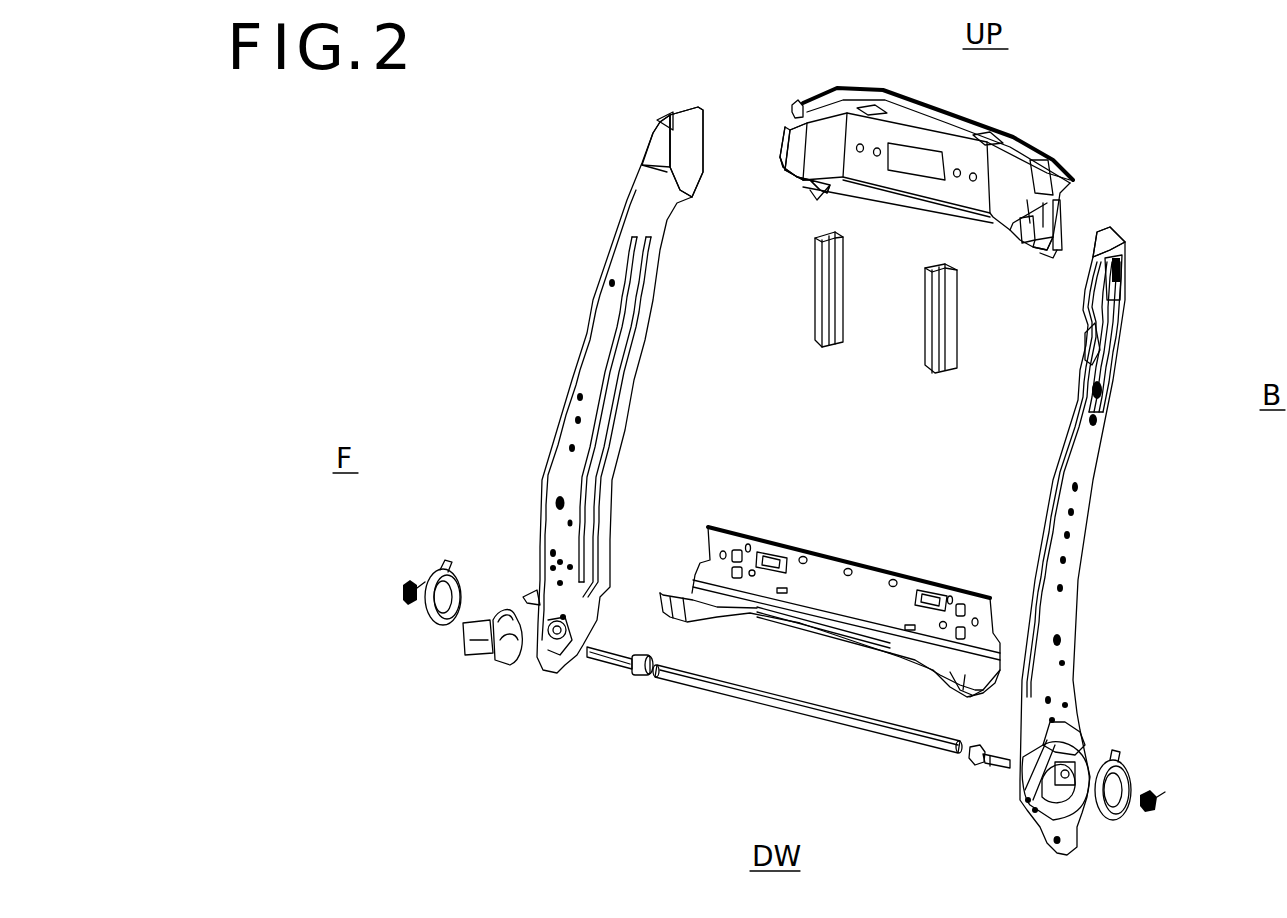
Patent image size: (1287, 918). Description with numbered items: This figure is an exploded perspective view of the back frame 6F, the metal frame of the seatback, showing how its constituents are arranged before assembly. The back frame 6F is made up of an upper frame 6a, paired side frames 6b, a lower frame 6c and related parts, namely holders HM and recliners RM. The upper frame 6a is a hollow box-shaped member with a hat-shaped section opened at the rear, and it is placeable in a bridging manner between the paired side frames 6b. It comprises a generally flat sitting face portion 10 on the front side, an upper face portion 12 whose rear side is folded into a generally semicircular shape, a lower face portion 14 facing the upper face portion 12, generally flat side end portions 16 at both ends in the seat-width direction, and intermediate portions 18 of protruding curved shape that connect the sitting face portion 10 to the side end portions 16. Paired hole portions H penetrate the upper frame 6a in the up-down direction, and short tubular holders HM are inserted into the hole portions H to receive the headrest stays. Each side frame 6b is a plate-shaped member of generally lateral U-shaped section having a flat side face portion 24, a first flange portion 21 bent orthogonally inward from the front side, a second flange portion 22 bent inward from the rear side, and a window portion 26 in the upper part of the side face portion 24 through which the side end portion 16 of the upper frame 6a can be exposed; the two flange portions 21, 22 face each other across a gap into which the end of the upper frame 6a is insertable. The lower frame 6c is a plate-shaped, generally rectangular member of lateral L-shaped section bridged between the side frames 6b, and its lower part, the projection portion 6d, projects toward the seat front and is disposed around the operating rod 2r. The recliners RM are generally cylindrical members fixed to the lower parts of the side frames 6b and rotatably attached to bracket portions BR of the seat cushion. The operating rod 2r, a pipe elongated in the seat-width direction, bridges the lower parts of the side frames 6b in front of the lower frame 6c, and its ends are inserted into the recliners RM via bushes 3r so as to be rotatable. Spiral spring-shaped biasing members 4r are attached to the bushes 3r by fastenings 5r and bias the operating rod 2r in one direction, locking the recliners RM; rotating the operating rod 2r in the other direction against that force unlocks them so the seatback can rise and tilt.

The operating rod 2r is at (800, 708).
The bush 3r is at (623, 665).
The biasing member 4r is at (437, 630).
The fastening 5r is at (403, 605).
The upper frame 6a is at (905, 200).
The side frame 6b is at (636, 377).
The lower frame 6c is at (850, 558).
The projection portion 6d is at (705, 615).
The back frame 6F is at (1097, 150).
The sitting face portion 10 is at (797, 102).
The upper face portion 12 is at (792, 118).
The lower face portion 14 is at (810, 192).
The side end portion 16 is at (778, 150).
The intermediate portion 18 is at (790, 170).
The first flange portion 21 is at (648, 146).
The second flange portion 22 is at (690, 130).
The side face portion 24 is at (658, 118).
The window portion 26 is at (1124, 265).
The hole portion H is at (870, 103).
The holder HM is at (815, 295).
The recliner RM is at (565, 675).
The bracket portion BR is at (505, 665).